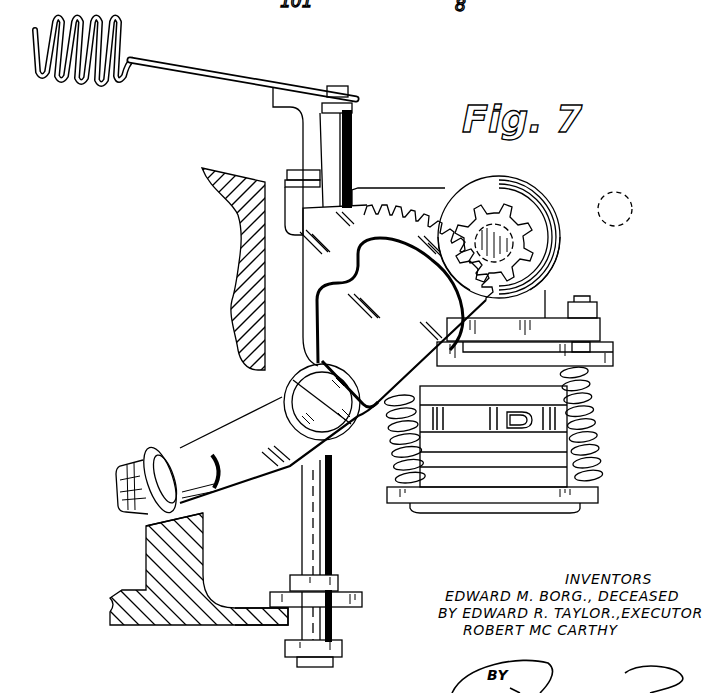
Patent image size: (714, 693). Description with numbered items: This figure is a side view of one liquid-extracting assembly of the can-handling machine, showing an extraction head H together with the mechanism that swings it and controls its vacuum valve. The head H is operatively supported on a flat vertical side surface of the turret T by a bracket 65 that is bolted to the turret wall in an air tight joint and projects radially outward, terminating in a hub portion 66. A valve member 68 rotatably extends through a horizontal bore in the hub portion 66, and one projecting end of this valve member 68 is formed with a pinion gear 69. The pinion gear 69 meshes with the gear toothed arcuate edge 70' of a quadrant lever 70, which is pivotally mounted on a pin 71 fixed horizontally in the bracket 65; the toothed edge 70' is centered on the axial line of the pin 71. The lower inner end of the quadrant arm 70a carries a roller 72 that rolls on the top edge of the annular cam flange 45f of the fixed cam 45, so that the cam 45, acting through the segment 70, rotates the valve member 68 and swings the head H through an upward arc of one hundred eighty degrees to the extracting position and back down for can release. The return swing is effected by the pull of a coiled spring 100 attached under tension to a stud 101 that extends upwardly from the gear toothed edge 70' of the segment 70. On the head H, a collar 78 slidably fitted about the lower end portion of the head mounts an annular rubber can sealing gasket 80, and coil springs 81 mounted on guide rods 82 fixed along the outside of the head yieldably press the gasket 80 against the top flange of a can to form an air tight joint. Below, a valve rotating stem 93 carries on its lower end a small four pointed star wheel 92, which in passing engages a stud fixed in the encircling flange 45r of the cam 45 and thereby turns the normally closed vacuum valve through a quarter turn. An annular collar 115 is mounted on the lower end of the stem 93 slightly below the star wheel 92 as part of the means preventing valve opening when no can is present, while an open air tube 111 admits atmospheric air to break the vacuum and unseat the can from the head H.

The coiled spring 100 is at (96, 78).
The open air tube 111 is at (273, 105).
The stud 101 is at (340, 127).
The bracket 65 is at (270, 253).
The quadrant lever 70 is at (336, 354).
The gear toothed arcuate edge 70' is at (426, 227).
The quadrant arm 70a is at (205, 497).
The pin 71 is at (293, 380).
The roller 72 is at (150, 448).
The valve member 68 is at (512, 222).
The pinion gear 69 is at (530, 247).
The hub portion 66 is at (550, 224).
The guide rods 82 is at (603, 343).
The extraction head H is at (613, 357).
The coil springs 81 is at (594, 398).
The annular rubber can sealing gasket 80 is at (500, 507).
The collar 78 is at (595, 490).
The valve rotating stem 93 is at (323, 540).
The star wheel 92 is at (362, 595).
The annular collar 115 is at (345, 650).
The fixed cam 45 is at (157, 578).
The annular cam flange 45f is at (150, 531).
The encircling flange 45r is at (257, 618).
The turret T is at (202, 168).